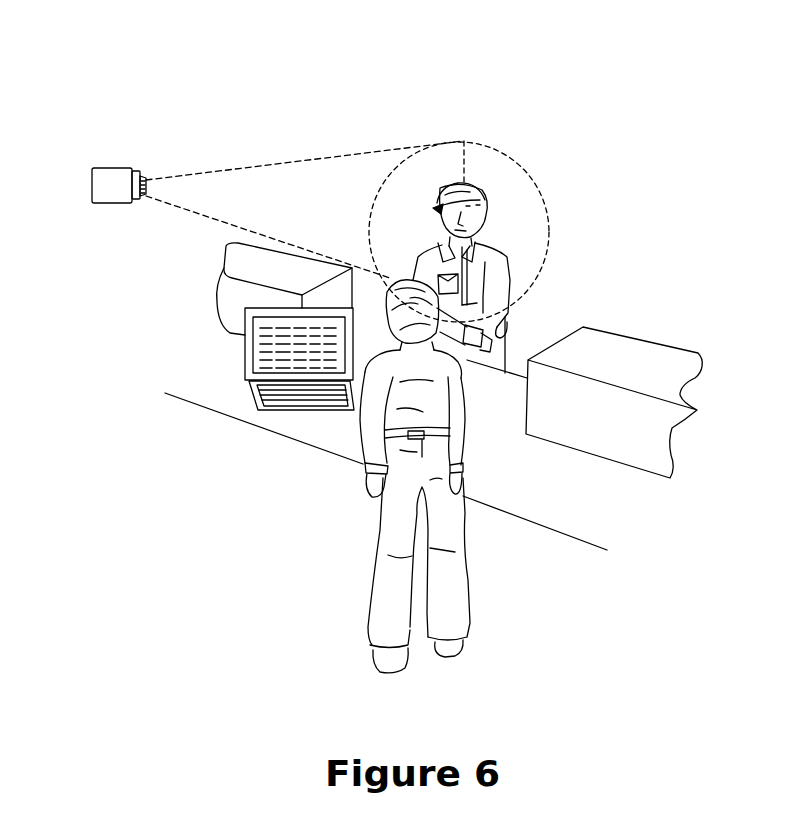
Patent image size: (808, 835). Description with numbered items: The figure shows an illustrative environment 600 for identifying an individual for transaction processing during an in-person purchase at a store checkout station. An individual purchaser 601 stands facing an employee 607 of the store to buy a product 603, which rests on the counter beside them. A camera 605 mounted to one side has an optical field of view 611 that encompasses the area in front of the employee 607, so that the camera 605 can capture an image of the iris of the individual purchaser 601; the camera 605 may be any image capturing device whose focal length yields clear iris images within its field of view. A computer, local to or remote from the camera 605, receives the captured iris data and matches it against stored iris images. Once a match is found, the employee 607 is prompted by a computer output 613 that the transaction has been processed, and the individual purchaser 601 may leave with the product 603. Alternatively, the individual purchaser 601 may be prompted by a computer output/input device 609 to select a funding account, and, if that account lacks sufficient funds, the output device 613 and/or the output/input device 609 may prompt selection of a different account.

The environment 600 is at (591, 90).
The individual purchaser 601 is at (463, 141).
The product 603 is at (608, 340).
The camera 605 is at (113, 177).
The employee 607 is at (383, 506).
The computer output/input device 609 is at (237, 285).
The optical field of view 611 is at (372, 223).
The computer output 613 is at (245, 358).